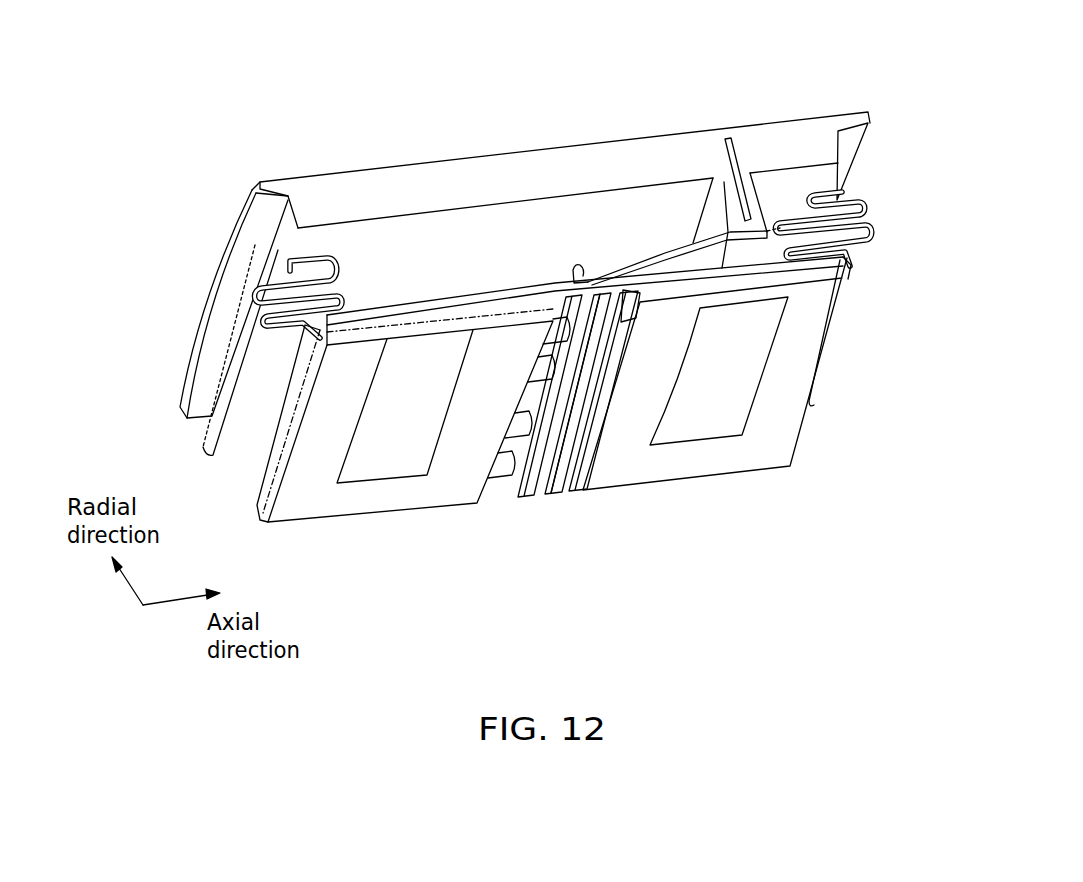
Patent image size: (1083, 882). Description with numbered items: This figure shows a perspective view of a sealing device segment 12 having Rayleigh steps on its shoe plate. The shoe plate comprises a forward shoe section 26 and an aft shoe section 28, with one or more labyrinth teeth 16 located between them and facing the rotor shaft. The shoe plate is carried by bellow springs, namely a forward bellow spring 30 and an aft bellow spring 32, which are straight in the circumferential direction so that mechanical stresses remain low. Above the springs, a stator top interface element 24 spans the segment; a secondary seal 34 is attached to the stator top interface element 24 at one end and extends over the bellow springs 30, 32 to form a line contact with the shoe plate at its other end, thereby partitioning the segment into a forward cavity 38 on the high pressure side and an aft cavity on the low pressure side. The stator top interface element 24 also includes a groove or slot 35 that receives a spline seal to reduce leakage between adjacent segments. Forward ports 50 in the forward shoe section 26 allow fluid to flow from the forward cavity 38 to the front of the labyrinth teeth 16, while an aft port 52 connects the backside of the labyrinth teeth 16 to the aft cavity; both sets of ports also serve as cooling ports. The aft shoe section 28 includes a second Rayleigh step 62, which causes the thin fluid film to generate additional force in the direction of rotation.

The sealing device segment 12 is at (830, 72).
The labyrinth teeth 16 is at (550, 497).
The stator top interface element 24 is at (262, 180).
The forward shoe section 26 is at (315, 502).
The aft shoe section 28 is at (805, 348).
The forward bellow spring 30 is at (222, 392).
The aft bellow spring 32 is at (866, 220).
The secondary seal 34 is at (623, 269).
The groove or slot 35 is at (726, 143).
The forward cavity 38 is at (443, 272).
The forward ports 50 is at (500, 425).
The aft port 52 is at (610, 387).
The second Rayleigh step 62 is at (725, 393).